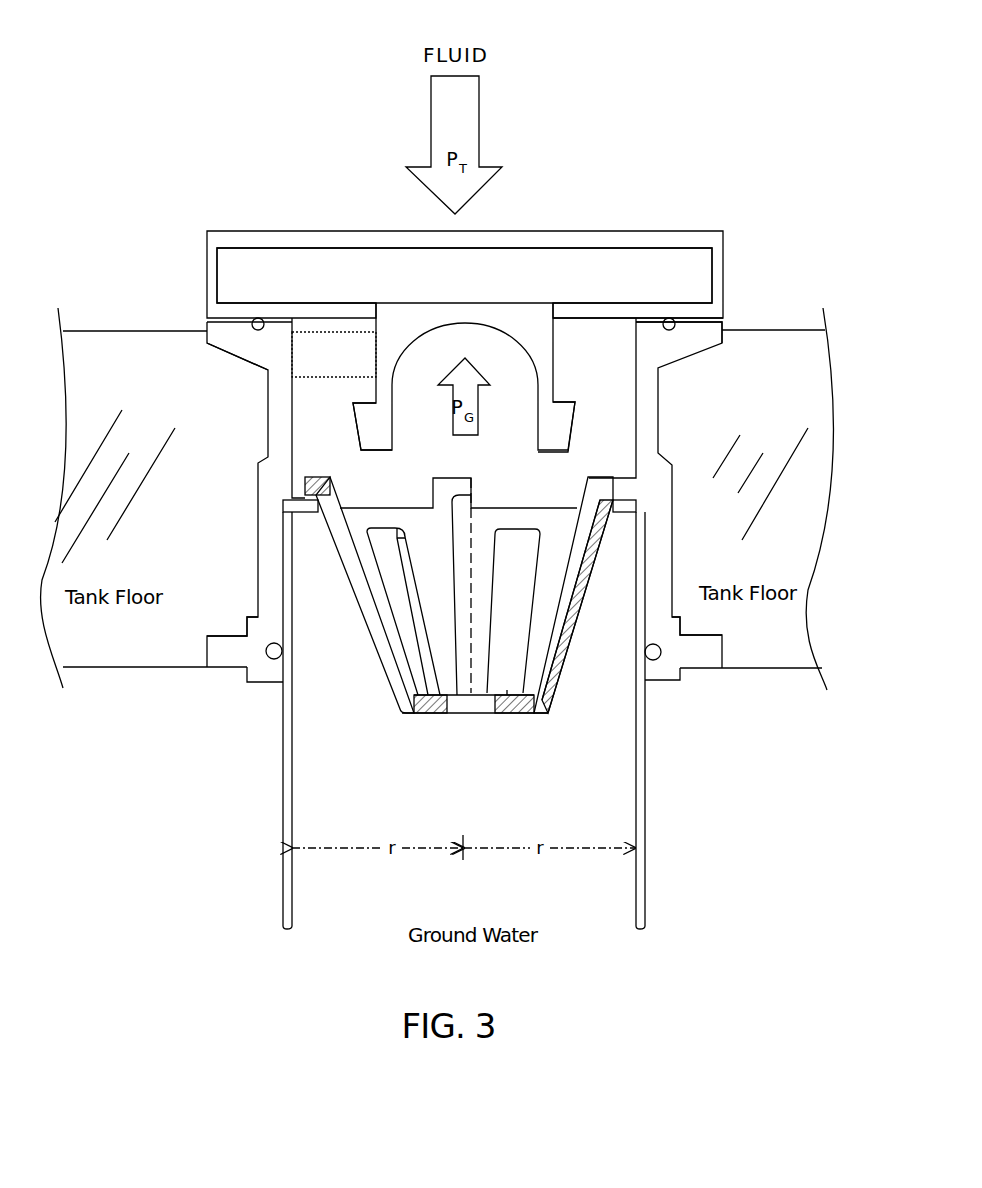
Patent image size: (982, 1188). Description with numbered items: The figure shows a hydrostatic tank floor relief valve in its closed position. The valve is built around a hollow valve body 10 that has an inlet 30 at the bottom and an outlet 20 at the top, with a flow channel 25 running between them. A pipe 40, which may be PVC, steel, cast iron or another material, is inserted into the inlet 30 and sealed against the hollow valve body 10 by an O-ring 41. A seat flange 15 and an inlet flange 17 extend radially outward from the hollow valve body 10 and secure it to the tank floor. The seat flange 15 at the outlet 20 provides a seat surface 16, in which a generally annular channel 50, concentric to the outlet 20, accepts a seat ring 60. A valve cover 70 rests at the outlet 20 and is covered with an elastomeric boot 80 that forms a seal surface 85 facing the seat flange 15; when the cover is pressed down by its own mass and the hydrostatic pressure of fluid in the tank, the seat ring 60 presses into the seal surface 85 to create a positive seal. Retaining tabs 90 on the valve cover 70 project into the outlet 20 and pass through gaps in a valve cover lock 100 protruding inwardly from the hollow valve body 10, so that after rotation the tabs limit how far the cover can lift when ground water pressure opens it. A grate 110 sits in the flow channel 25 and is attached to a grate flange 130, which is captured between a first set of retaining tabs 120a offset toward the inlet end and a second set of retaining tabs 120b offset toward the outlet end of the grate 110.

The hollow valve body 10 is at (268, 428).
The seat flange 15 is at (225, 350).
The seat surface 16 is at (688, 324).
The inlet flange 17 is at (205, 647).
The outlet 20 is at (603, 366).
The flow channel 25 is at (423, 474).
The inlet 30 is at (325, 677).
The pipe 40 is at (282, 802).
The O-ring 41 is at (268, 657).
The channel 50 is at (670, 331).
The seat ring 60 is at (676, 328).
The valve cover 70 is at (478, 296).
The elastomeric boot 80 is at (607, 230).
The seal surface 85 is at (673, 322).
The retaining tabs 90 is at (357, 430).
The valve cover lock 100 is at (328, 364).
The grate 110 is at (392, 715).
The first set of retaining tabs 120a is at (618, 503).
The second set of retaining tabs 120b is at (328, 480).
The grate flange 130 is at (307, 500).